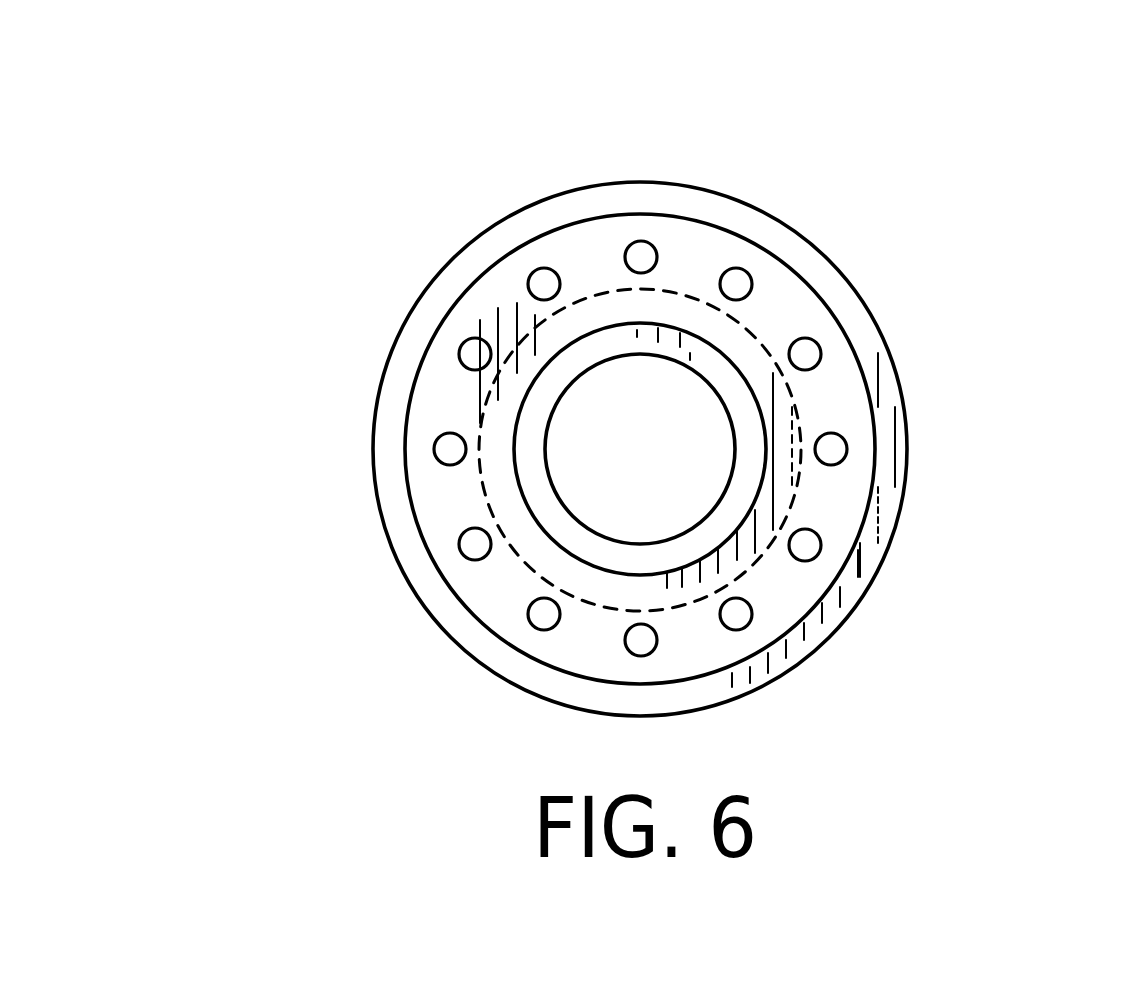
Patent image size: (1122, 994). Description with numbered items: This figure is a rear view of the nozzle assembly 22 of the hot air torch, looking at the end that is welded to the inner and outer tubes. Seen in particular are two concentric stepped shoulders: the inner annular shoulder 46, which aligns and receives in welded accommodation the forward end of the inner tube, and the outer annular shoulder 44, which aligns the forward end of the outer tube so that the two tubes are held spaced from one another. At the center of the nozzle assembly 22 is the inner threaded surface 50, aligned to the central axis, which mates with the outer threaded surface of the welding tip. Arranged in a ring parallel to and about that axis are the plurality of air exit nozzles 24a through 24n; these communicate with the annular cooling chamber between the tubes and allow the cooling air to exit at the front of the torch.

The nozzle assembly 22 is at (928, 193).
The outer annular shoulder 44 is at (601, 433).
The inner annular shoulder 46 is at (592, 337).
The inner threaded surface 50 is at (529, 500).
The air exit nozzle 24n is at (312, 392).
The air exit nozzle 24a is at (956, 498).